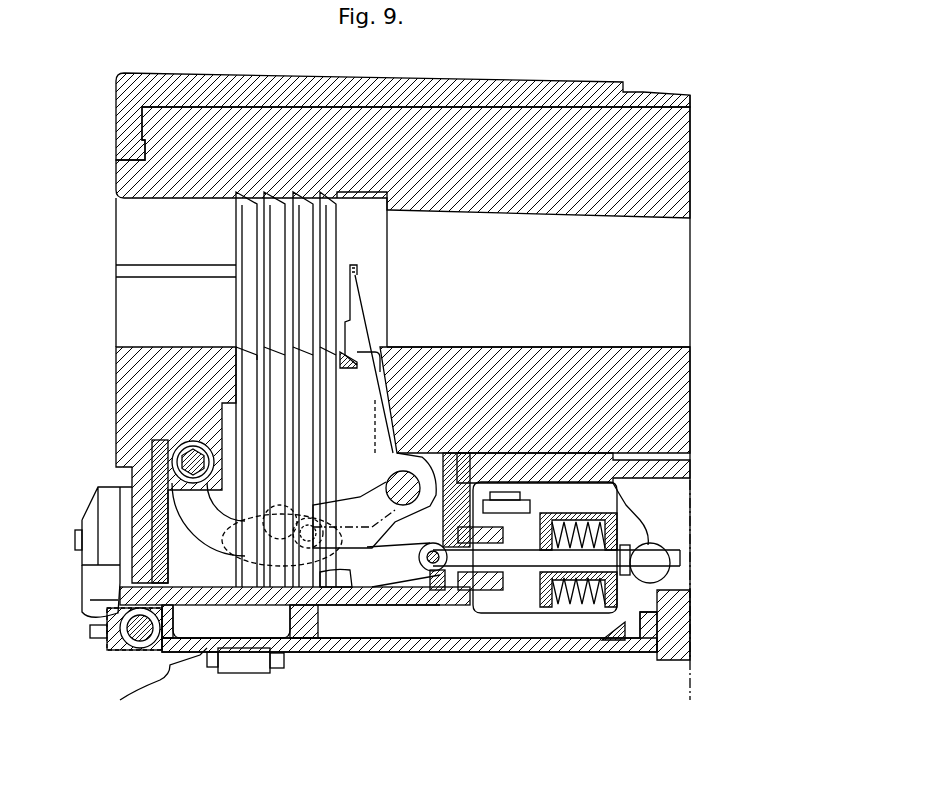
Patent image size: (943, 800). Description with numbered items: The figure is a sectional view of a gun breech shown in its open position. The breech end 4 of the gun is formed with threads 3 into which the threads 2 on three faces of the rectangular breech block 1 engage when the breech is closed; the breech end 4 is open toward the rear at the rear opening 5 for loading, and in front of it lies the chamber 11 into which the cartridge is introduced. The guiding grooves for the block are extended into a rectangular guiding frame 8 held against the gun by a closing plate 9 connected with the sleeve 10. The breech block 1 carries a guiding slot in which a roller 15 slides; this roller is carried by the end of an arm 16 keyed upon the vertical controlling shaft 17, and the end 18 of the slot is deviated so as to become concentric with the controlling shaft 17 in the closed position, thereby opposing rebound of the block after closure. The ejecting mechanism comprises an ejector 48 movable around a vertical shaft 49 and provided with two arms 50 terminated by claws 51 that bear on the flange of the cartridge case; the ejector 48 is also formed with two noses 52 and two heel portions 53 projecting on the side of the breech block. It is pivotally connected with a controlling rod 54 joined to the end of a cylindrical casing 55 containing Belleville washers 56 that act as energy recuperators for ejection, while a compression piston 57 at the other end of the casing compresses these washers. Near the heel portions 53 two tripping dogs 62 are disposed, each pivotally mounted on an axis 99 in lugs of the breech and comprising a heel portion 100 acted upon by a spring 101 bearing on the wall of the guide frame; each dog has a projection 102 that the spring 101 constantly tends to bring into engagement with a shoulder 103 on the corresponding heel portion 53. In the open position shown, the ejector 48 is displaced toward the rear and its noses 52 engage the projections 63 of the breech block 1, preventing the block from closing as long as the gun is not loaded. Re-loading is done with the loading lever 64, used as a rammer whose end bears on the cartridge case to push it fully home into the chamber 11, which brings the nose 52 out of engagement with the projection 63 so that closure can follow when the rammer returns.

The breech block 1 is at (249, 382).
The threads 2 is at (243, 357).
The threads 3 is at (288, 197).
The breech end 4 is at (428, 125).
The rear opening 5 is at (122, 318).
The guiding frame 8 is at (205, 570).
The closing plate 9 is at (135, 592).
The sleeve 10 is at (298, 85).
The chamber 11 is at (538, 305).
The roller 15 is at (307, 622).
The arm 16 is at (208, 519).
The controlling shaft 17 is at (193, 462).
The end of guiding slot 18 is at (310, 507).
The ejector 48 is at (427, 380).
The vertical shaft 49 is at (403, 488).
The arms 50 is at (352, 336).
The claws 51 is at (355, 268).
The noses 52 is at (389, 348).
The heel portions 53 is at (333, 520).
The controlling rod 54 is at (440, 580).
The cylindrical casing 55 is at (618, 585).
The Belleville washers 56 is at (575, 608).
The compression piston 57 is at (538, 608).
The tripping dogs 62 is at (370, 560).
The projections 63 is at (403, 340).
The loading lever 64 is at (62, 678).
The axis 99 is at (433, 548).
The heel portion 100 is at (422, 600).
The spring 101 is at (447, 580).
The projection 102 is at (368, 563).
The shoulder 103 is at (379, 622).